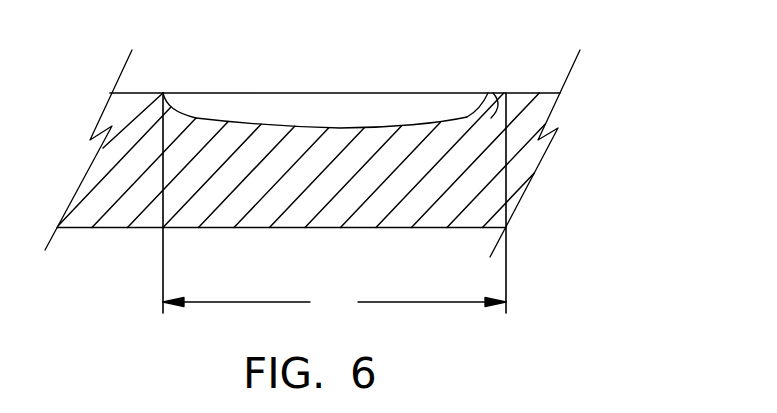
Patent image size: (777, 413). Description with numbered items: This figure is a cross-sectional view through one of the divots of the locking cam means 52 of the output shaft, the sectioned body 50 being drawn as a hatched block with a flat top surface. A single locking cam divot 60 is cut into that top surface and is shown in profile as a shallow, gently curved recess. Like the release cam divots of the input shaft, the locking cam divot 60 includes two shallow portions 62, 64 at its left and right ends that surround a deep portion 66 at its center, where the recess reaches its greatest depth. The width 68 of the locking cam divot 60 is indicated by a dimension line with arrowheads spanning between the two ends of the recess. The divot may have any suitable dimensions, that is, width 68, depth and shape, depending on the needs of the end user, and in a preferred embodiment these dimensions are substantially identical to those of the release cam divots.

The substrate body 50 is at (530, 121).
The locking cam means 52 is at (412, 93).
The locking cam divot 60 is at (359, 73).
The shallow portion 62 is at (185, 95).
The shallow portion 64 is at (488, 93).
The deep portion 66 is at (340, 127).
The width 68 is at (334, 207).